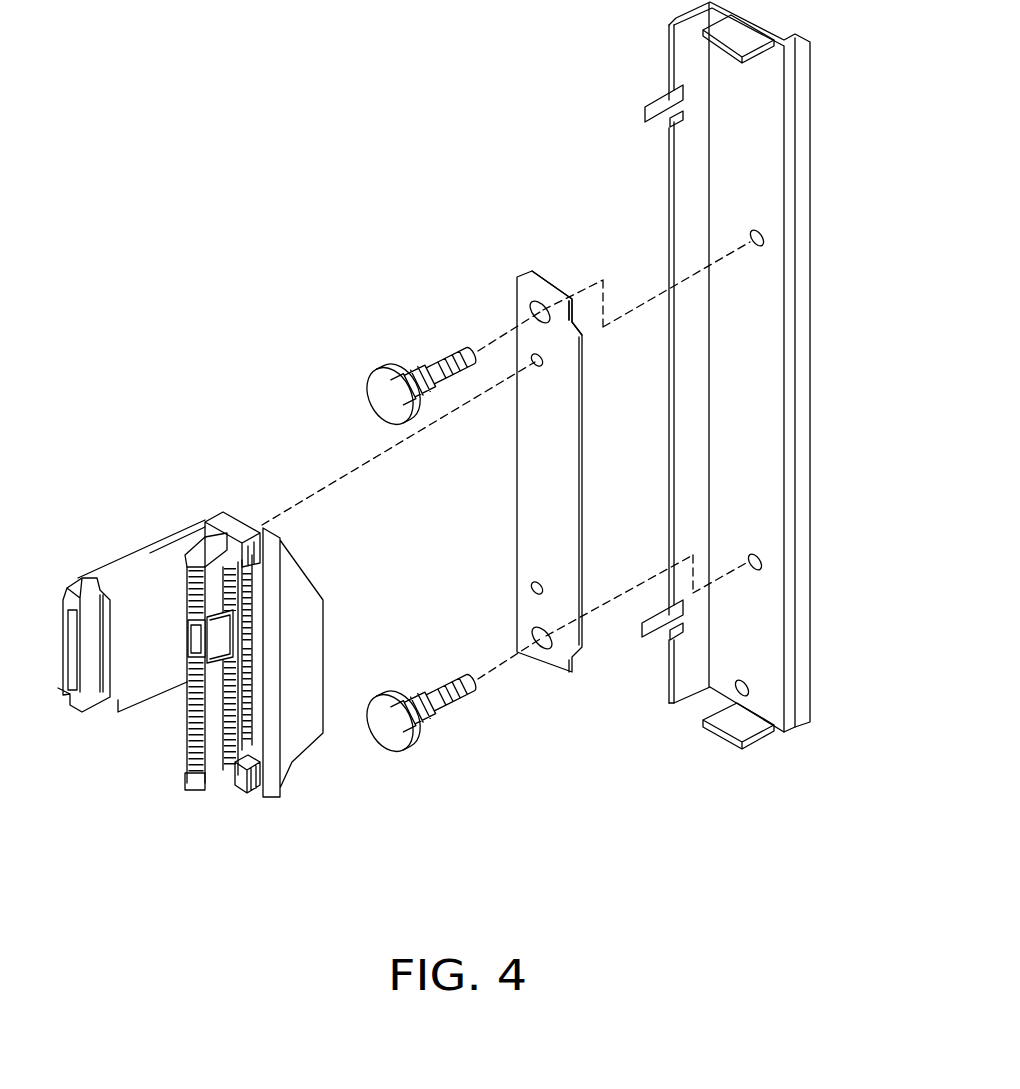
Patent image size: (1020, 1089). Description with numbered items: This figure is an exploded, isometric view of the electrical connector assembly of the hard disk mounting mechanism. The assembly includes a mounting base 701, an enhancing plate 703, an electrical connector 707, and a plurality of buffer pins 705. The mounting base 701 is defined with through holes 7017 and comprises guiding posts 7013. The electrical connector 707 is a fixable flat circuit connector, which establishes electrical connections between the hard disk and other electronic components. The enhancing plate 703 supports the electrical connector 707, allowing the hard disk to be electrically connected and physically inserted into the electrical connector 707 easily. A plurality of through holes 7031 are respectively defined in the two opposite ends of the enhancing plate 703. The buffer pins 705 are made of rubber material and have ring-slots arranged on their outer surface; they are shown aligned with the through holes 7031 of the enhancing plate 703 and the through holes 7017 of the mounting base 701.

The mounting base 701 is at (649, 395).
The guiding posts 7013 is at (667, 633).
The through holes 7017 is at (757, 238).
The enhancing plate 703 is at (543, 491).
The through holes 7031 is at (556, 298).
The buffer pins 705 is at (385, 388).
The electrical connector 707 is at (143, 563).